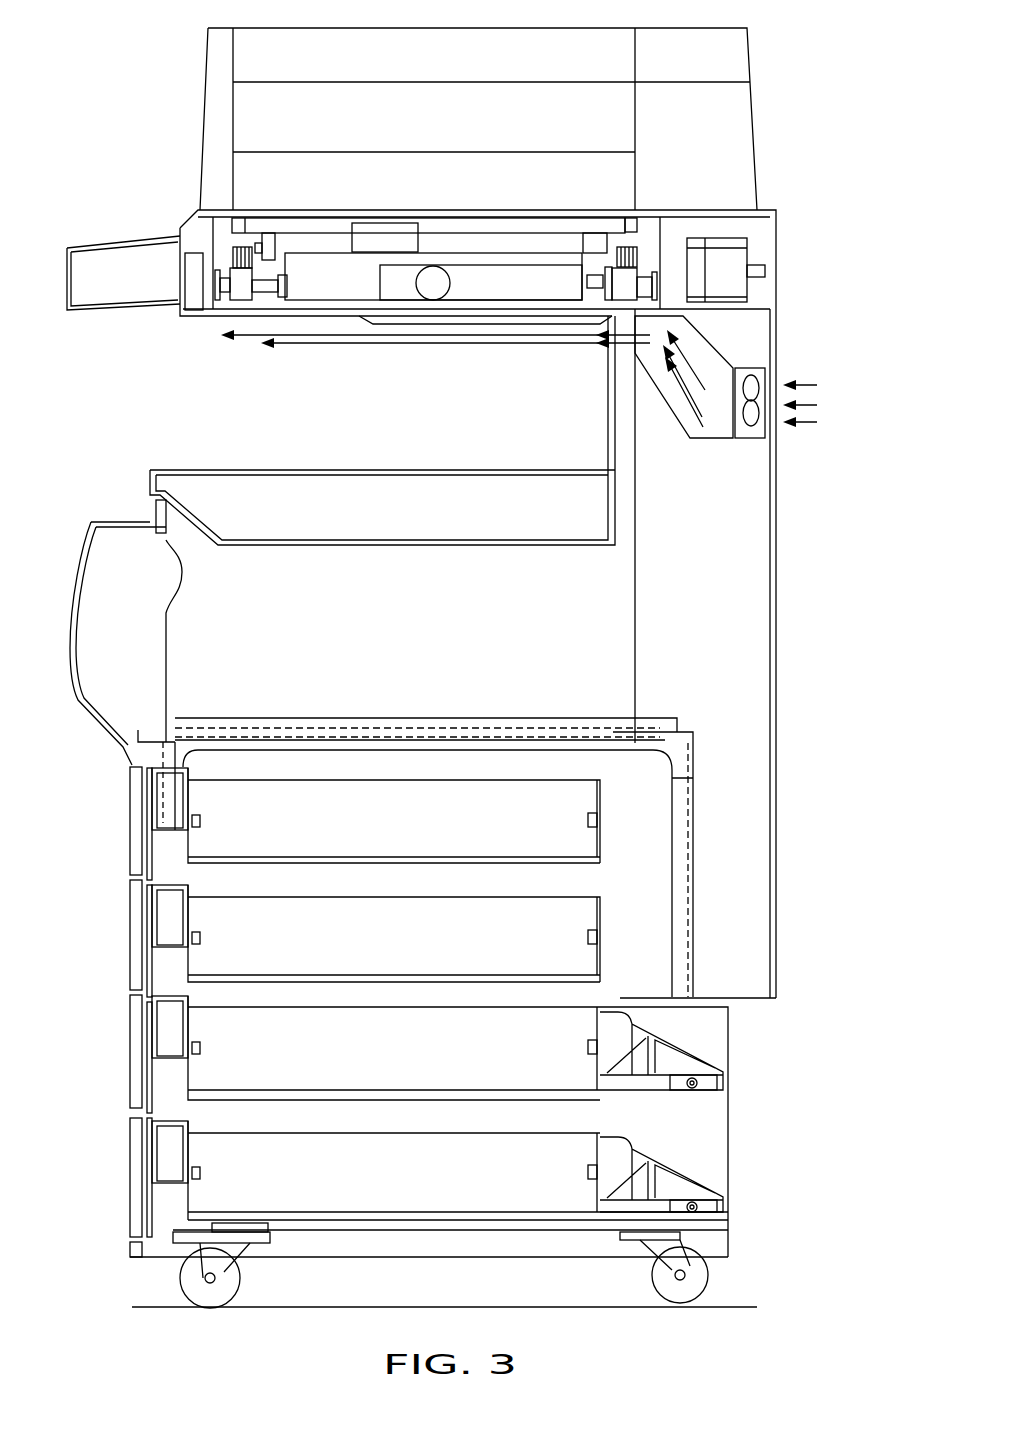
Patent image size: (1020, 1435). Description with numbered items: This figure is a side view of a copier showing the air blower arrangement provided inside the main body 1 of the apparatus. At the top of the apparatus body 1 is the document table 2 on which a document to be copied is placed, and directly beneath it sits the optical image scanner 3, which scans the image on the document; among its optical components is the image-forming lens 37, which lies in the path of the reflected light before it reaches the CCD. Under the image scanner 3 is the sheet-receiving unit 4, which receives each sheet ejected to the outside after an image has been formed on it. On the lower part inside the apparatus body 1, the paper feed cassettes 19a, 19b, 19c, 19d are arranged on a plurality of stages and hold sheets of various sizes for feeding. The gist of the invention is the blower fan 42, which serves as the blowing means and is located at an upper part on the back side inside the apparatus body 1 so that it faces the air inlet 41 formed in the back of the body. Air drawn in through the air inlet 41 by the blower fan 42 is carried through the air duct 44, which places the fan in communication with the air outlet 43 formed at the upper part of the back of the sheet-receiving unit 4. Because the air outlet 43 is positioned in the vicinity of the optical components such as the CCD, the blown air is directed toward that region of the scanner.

The main body of apparatus 1 is at (778, 580).
The document table 2 is at (399, 218).
The optical image scanner 3 is at (705, 227).
The sheet-receiving unit 4 is at (487, 439).
The image-forming lens 37 is at (438, 266).
The air inlet 41 is at (770, 432).
The blower fan 42 is at (767, 380).
The air outlet 43 is at (610, 356).
The air duct 44 is at (677, 423).
The paper feed cassette 19a is at (218, 837).
The paper feed cassette 19b is at (218, 952).
The paper feed cassette 19c is at (218, 1072).
The paper feed cassette 19d is at (218, 1192).